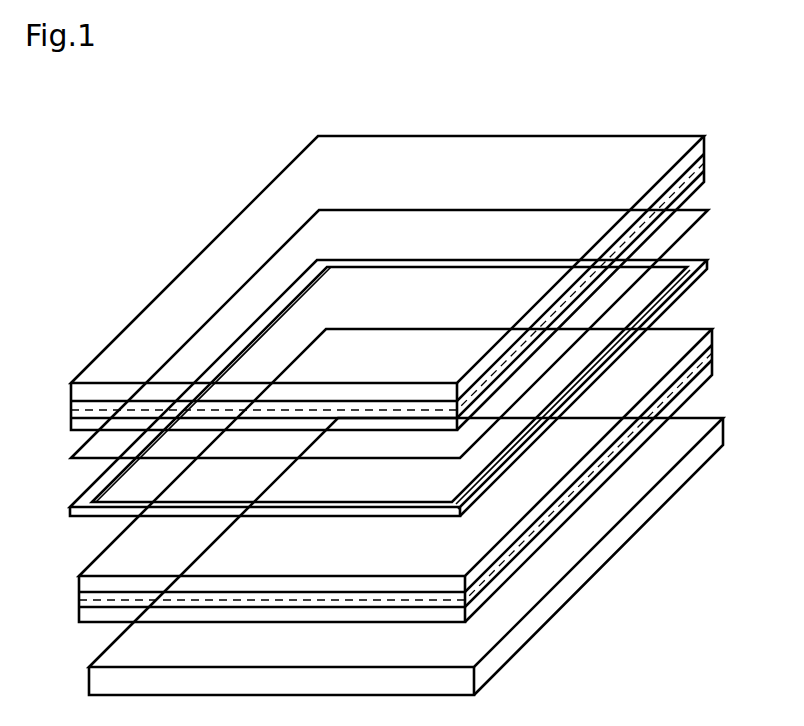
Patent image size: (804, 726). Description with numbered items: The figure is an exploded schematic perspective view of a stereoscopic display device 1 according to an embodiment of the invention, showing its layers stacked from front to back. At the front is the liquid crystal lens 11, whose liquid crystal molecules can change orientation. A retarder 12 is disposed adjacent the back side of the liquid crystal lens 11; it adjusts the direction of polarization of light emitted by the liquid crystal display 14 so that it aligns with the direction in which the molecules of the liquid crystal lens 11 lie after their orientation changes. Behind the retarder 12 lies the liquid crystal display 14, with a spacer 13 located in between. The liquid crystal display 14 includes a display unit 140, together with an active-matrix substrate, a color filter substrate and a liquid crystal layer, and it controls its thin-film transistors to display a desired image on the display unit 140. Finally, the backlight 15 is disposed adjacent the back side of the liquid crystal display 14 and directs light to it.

The stereoscopic display device 1 is at (156, 188).
The liquid crystal lens 11 is at (712, 137).
The retarder 12 is at (680, 222).
The spacer 13 is at (694, 273).
The liquid crystal display 14 is at (722, 329).
The display unit 140 is at (560, 447).
The backlight 15 is at (709, 447).